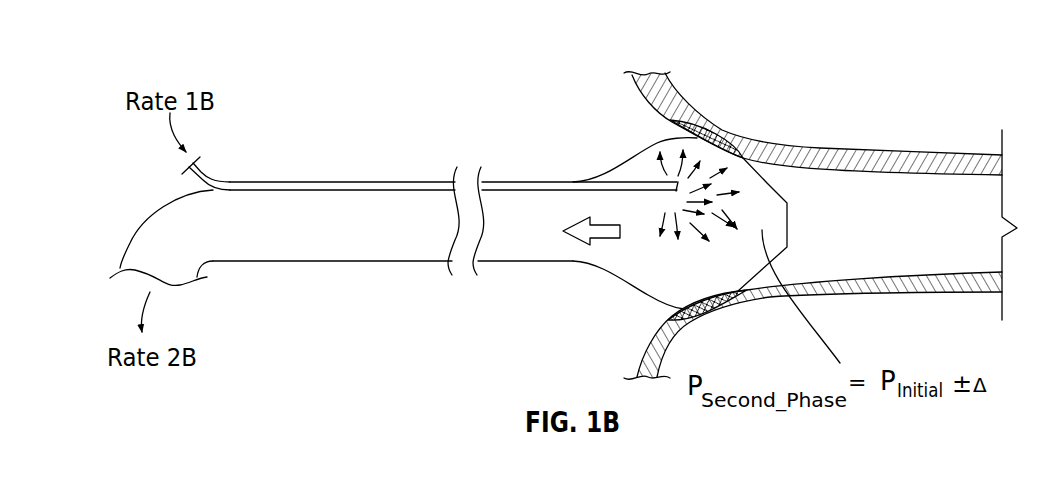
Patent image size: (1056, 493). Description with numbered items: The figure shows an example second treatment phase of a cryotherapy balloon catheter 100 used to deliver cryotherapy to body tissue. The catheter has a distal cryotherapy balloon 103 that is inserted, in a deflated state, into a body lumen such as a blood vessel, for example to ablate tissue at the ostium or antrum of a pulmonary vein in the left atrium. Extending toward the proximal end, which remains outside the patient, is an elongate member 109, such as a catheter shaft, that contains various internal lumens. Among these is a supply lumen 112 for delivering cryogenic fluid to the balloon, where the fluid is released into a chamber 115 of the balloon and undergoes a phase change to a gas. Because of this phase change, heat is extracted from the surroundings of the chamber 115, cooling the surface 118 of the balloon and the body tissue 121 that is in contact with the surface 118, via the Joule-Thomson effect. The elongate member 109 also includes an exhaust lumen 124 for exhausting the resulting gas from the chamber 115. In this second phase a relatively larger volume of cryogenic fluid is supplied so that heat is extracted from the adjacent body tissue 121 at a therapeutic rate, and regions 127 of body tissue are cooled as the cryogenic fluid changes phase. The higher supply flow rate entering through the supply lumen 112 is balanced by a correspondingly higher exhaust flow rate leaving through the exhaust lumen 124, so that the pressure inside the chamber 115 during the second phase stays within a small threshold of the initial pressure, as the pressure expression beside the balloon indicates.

The cryotherapy balloon catheter 100 is at (168, 33).
The distal cryotherapy balloon 103 is at (846, 227).
The elongate member 109 is at (577, 138).
The supply lumen 112 is at (630, 185).
The chamber 115 is at (697, 281).
The surface of the balloon 118 is at (766, 185).
The body tissue 121 is at (840, 147).
The exhaust lumen 124 is at (544, 236).
The regions of body tissue 127 is at (718, 120).